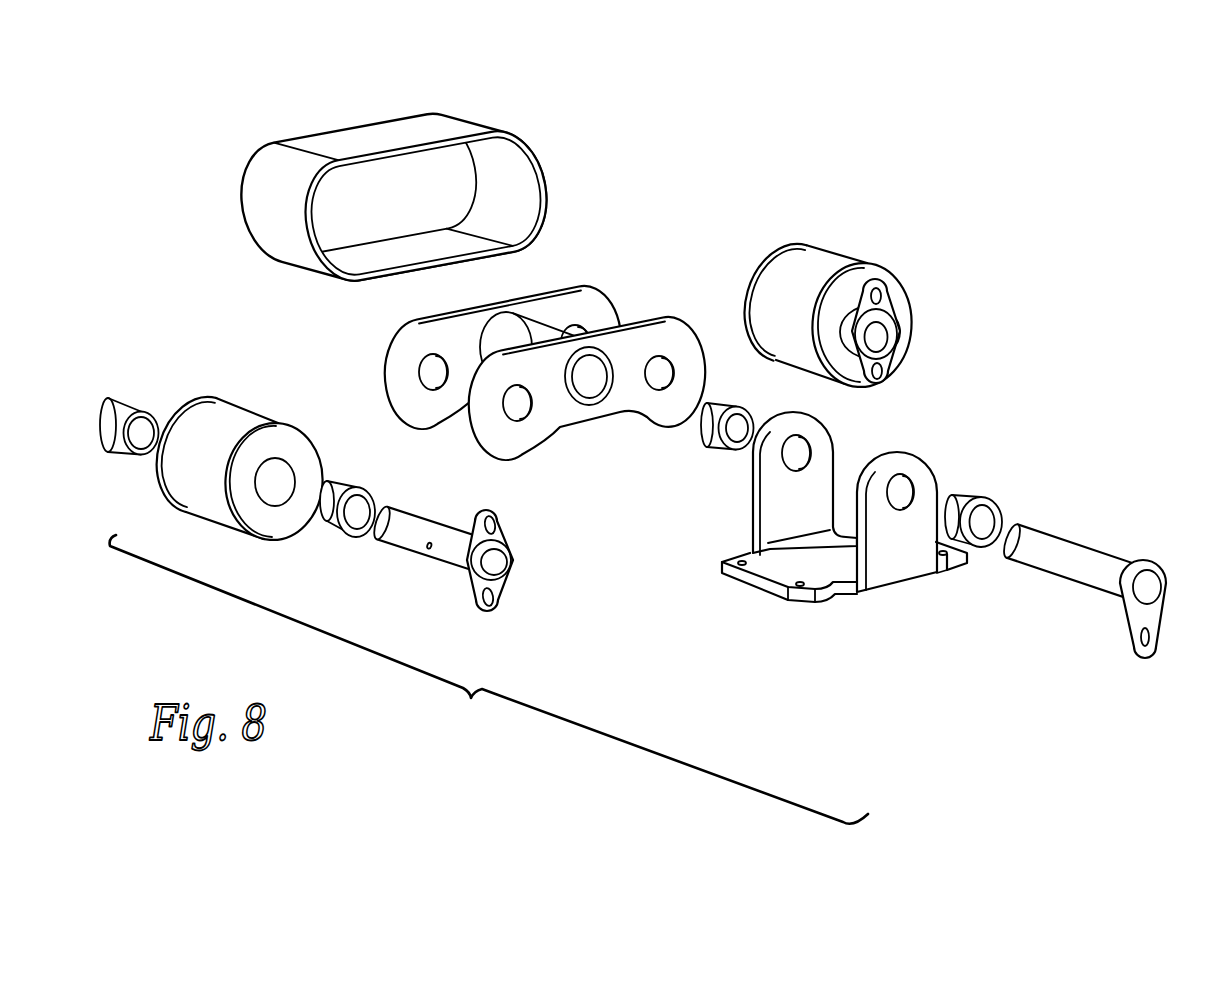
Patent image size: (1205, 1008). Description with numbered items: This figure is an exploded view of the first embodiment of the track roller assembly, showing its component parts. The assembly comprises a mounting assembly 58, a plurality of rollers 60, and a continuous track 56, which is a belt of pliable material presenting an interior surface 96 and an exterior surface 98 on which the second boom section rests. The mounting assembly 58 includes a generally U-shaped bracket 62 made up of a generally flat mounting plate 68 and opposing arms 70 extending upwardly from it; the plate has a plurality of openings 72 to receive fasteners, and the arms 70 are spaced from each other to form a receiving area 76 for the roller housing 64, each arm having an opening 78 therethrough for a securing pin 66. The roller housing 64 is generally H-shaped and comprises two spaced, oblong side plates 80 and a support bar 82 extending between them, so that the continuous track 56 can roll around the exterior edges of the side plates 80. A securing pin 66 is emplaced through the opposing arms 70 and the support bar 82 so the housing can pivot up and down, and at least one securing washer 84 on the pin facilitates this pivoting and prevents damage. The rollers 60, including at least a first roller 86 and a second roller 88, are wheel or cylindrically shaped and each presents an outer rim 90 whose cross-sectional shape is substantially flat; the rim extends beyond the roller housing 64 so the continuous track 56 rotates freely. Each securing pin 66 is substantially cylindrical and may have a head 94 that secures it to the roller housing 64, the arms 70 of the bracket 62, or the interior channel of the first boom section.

The continuous track 56 is at (395, 166).
The mounting assembly 58 is at (816, 519).
The rollers 60 is at (553, 367).
The bracket 62 is at (816, 510).
The roller housing 64 is at (554, 344).
The securing pins 66 is at (435, 530).
The mounting plate 68 is at (787, 587).
The opposing arms 70 is at (775, 488).
The openings 72 is at (743, 567).
The receiving area 76 is at (849, 453).
The opening 78 is at (797, 442).
The side plates 80 is at (554, 344).
The support bar 82 is at (511, 327).
The securing washer 84 is at (120, 410).
The first roller 86 is at (220, 427).
The second roller 88 is at (823, 263).
The outer rim 90 is at (318, 430).
The head 94 is at (500, 580).
The interior surface 96 is at (520, 163).
The exterior surface 98 is at (457, 128).